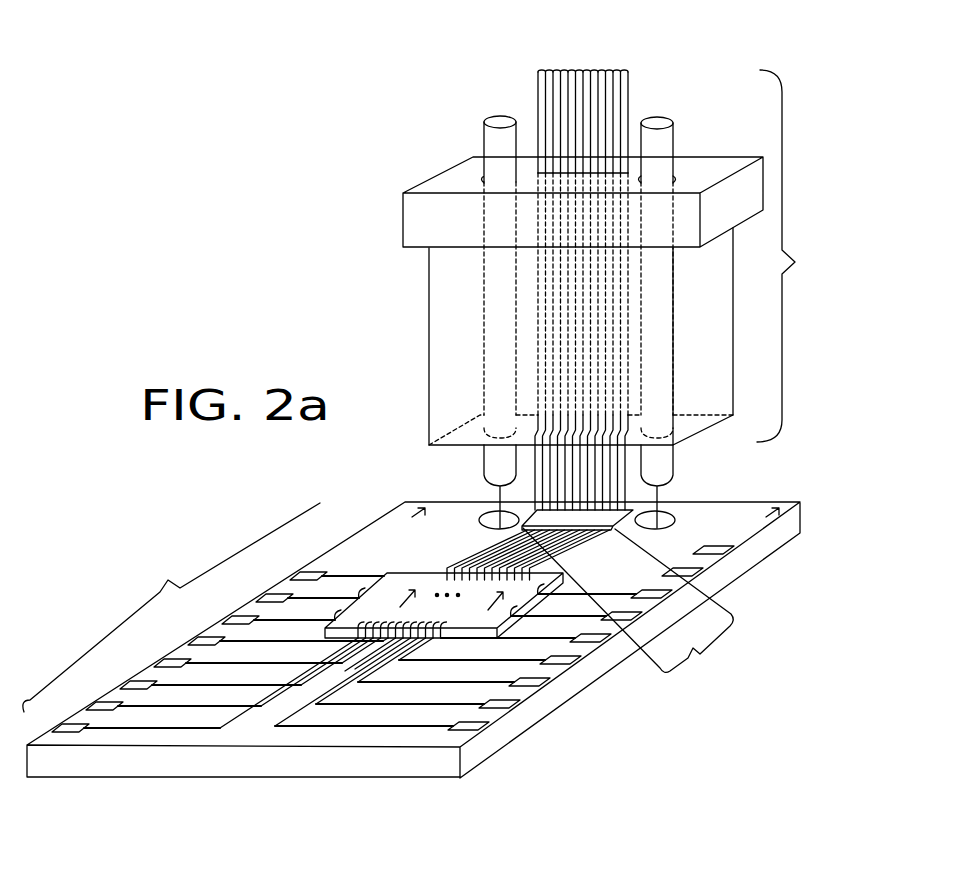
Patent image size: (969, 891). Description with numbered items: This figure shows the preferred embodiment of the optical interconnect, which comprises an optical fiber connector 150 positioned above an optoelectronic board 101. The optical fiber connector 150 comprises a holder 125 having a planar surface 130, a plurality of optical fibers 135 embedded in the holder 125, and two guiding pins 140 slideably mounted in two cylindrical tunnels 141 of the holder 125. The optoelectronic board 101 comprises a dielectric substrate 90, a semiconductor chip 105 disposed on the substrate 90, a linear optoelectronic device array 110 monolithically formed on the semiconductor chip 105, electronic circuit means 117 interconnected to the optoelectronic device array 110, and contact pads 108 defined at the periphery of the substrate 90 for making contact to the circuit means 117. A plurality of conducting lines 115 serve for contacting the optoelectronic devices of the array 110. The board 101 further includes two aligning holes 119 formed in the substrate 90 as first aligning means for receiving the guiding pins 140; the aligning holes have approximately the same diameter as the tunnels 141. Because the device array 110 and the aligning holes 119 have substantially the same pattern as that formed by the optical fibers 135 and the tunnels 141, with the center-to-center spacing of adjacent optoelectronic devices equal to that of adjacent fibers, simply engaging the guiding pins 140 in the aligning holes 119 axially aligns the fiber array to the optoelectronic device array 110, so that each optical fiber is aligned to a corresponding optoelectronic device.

The dielectric substrate 90 is at (744, 557).
The optoelectronic board 101 is at (203, 617).
The semiconductor chip 105 is at (585, 540).
The contact pads 108 is at (86, 702).
The optoelectronic device array 110 is at (537, 503).
The conducting lines 115 is at (633, 605).
The electronic circuit means 117 is at (500, 622).
The aligning holes 119 is at (672, 505).
The holder 125 is at (452, 176).
The planar surface 130 is at (694, 440).
The optical fibers 135 is at (628, 47).
The guiding pins 140 is at (497, 122).
The cylindrical tunnels 141 is at (680, 172).
The optical fiber connector 150 is at (609, 270).